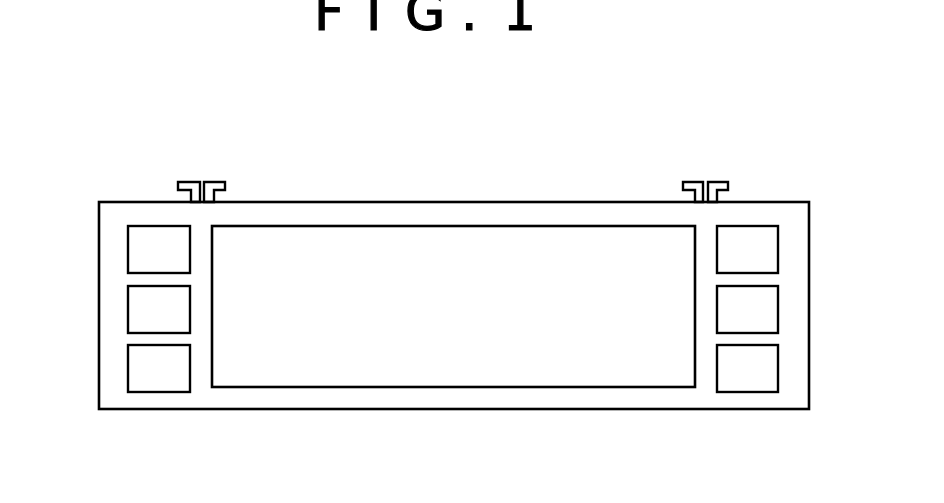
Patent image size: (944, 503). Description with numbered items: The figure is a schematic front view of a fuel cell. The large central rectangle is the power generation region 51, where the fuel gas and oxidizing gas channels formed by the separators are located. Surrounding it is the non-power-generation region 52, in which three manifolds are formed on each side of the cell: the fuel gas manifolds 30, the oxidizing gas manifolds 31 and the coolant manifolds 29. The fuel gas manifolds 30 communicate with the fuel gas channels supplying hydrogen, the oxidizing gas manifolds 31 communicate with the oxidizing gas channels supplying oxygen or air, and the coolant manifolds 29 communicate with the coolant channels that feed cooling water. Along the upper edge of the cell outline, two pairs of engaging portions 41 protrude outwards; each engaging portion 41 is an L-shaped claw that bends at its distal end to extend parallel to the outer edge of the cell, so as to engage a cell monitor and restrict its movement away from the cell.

The coolant manifold 29 is at (153, 310).
The fuel gas manifold 30 is at (157, 373).
The oxidizing gas manifold 31 is at (147, 252).
The engaging portion 41 is at (195, 182).
The power generation region 51 is at (497, 228).
The non-power-generation region 52 is at (115, 279).